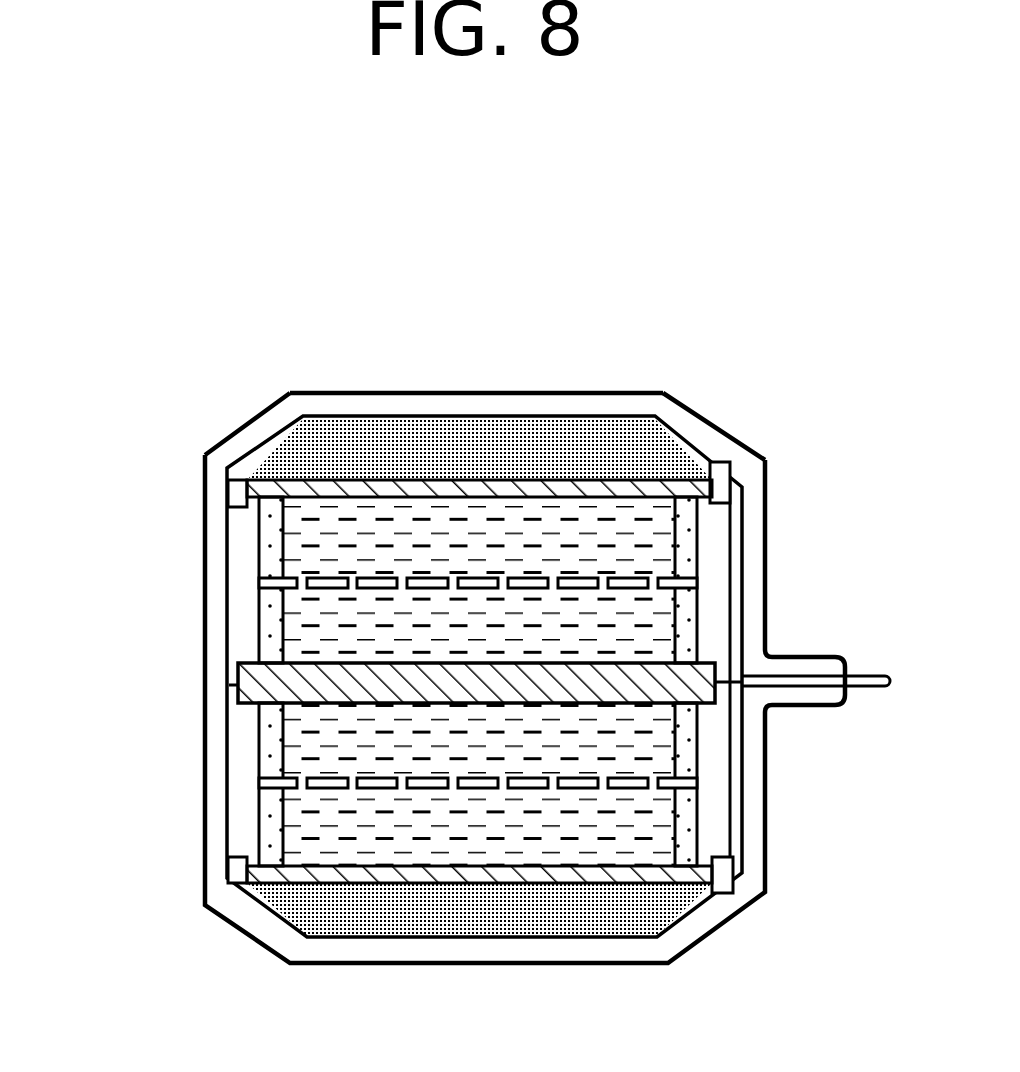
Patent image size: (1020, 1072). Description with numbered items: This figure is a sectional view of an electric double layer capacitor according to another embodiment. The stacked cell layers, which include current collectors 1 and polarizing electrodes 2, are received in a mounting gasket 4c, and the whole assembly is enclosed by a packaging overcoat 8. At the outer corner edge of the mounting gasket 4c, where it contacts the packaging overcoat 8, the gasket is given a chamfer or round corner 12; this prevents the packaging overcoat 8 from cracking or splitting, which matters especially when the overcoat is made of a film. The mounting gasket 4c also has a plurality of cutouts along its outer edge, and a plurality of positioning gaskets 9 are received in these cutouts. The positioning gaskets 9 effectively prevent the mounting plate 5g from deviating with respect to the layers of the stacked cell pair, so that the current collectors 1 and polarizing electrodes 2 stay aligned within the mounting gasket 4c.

The packaging overcoat 8 is at (623, 390).
The chamfer or round corner 12 is at (203, 462).
The mounting plate 5g is at (490, 420).
The positioning gasket 9 is at (233, 473).
The current collector 1 is at (345, 490).
The polarizing electrode 2 is at (673, 536).
The mounting gasket 4c is at (227, 585).